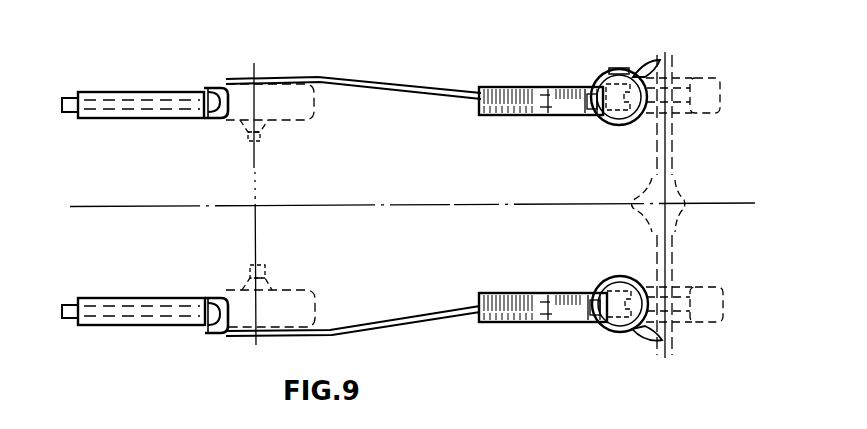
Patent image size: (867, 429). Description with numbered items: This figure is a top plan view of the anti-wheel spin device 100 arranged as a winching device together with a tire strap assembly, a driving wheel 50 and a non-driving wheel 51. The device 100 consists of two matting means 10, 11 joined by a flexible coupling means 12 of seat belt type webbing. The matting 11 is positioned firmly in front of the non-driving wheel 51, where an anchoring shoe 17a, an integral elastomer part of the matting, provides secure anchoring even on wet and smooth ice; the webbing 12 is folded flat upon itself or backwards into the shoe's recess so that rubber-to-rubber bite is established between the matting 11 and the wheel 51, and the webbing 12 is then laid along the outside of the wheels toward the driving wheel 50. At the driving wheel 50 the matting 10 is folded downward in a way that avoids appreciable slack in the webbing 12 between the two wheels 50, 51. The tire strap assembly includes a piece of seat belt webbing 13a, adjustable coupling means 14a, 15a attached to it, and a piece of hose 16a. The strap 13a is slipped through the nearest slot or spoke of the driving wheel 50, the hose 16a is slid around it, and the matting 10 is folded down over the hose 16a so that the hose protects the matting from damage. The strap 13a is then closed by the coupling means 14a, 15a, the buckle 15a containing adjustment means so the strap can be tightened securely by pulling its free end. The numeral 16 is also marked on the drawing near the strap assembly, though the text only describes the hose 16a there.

The anti-wheel spin device 100 is at (355, 63).
The matting means 10 is at (510, 90).
The matting means 11 is at (115, 88).
The coupling means 12 is at (414, 92).
The seat belt webbing 13a is at (592, 80).
The adjustable coupling means 14a is at (664, 199).
The adjustable coupling means 15a is at (625, 70).
The ring collar 16 is at (615, 182).
The hose 16a is at (615, 182).
The anchoring shoe 17a is at (203, 90).
The driving wheel 50 is at (727, 97).
The non-driving wheel 51 is at (320, 101).